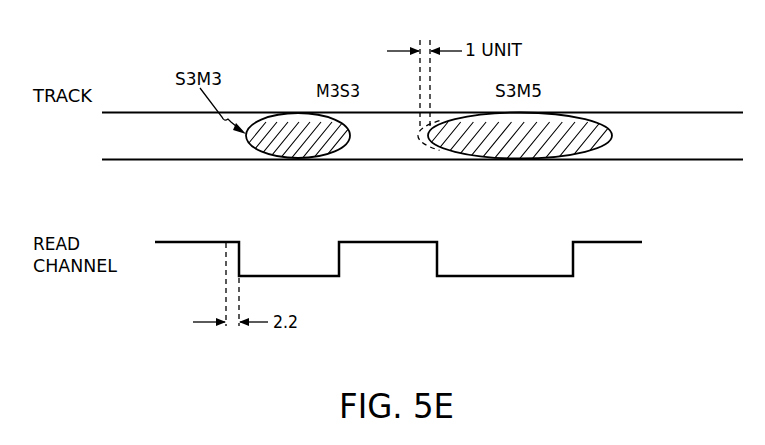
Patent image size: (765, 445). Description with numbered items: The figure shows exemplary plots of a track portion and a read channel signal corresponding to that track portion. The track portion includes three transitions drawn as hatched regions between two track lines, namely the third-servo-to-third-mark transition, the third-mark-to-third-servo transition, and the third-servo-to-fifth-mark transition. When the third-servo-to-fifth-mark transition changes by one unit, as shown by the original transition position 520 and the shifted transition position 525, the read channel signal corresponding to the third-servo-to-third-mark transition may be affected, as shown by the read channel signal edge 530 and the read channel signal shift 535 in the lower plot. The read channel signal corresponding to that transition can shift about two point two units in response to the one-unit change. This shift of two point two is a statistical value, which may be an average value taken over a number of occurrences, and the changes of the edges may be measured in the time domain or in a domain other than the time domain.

The transition S3M5 position 520 is at (574, 128).
The shifted transition S3M5 position 525 is at (424, 146).
The read channel signal edge for transition S3M3 530 is at (240, 258).
The read channel signal shift 535 is at (226, 282).